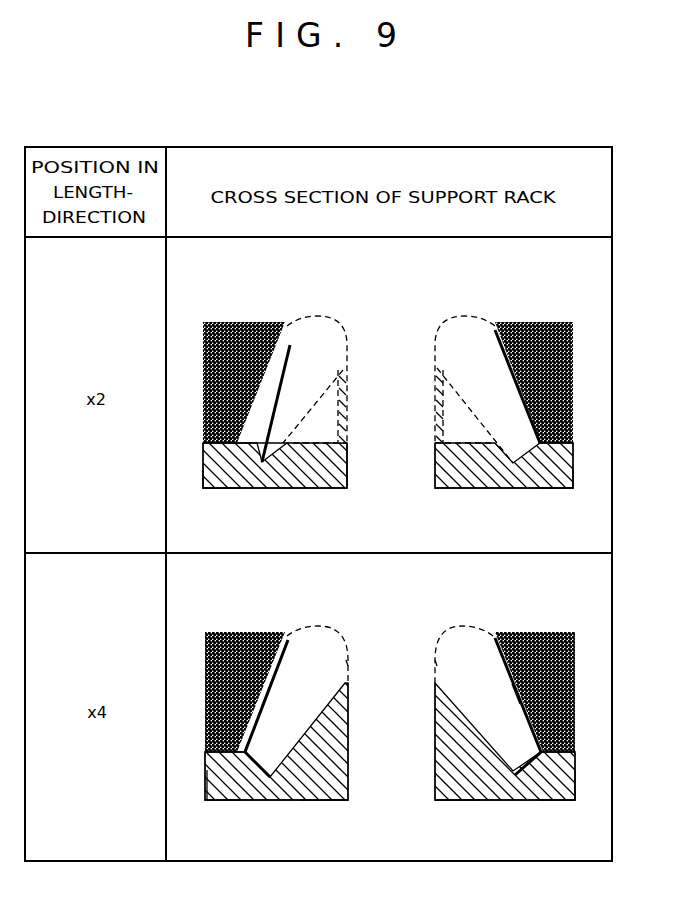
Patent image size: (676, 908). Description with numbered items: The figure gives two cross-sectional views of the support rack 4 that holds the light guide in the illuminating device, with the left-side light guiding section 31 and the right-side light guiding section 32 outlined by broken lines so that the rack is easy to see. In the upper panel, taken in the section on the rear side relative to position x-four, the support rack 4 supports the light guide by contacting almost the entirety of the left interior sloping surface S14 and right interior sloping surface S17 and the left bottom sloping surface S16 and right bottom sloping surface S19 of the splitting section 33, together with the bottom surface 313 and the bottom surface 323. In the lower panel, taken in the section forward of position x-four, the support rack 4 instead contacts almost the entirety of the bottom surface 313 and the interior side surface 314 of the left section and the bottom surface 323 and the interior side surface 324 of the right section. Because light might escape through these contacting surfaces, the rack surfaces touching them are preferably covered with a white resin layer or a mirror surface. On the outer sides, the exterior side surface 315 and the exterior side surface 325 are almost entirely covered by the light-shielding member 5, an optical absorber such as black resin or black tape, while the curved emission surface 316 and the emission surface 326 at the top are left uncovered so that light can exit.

The support rack 4 is at (437, 437).
The light-shielding member 5 is at (258, 322).
The left-side light guiding section 31 is at (321, 310).
The right-side light guiding section 32 is at (465, 311).
The splitting section 33 is at (437, 395).
The left interior sloping surface S14 is at (352, 463).
The left bottom sloping surface S16 is at (316, 465).
The right interior sloping surface S17 is at (439, 370).
The right bottom sloping surface S19 is at (456, 470).
The bottom surface 313 is at (241, 468).
The interior side surface 314 is at (317, 782).
The exterior side surface 315 is at (262, 700).
The emission surface 316 is at (350, 660).
The bottom surface 323 is at (522, 470).
The interior side surface 324 is at (463, 795).
The exterior side surface 325 is at (512, 692).
The emission surface 326 is at (446, 632).